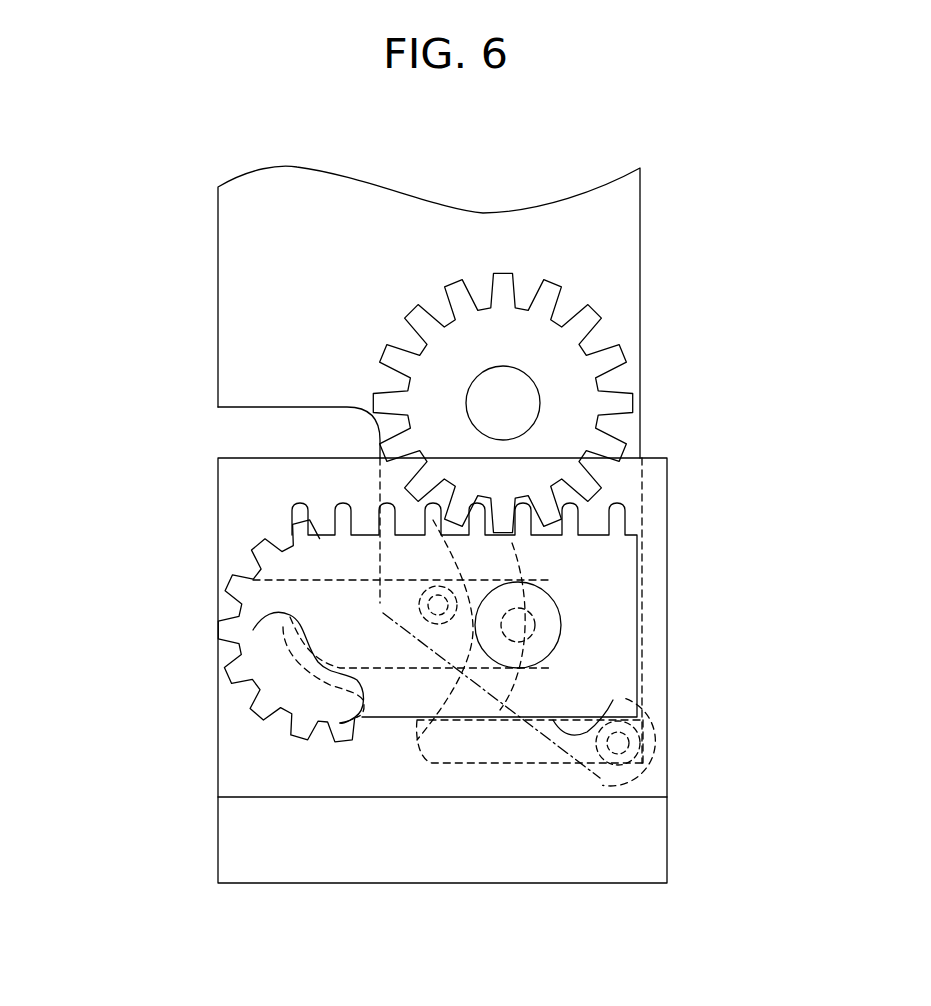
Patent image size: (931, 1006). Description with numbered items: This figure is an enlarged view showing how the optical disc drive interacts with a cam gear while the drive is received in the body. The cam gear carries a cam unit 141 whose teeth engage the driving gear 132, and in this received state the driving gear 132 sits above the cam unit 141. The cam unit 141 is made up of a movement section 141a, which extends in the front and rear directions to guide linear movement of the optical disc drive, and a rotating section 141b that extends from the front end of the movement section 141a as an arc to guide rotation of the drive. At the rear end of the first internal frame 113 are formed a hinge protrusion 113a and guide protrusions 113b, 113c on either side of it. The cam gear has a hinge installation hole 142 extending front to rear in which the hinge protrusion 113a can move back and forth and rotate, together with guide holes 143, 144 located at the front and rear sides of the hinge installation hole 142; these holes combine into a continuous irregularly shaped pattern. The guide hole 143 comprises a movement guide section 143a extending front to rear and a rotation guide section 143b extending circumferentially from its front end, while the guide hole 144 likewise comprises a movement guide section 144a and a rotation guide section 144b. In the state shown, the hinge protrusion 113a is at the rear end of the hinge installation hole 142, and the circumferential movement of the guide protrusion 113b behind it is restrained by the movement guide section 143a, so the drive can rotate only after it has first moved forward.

The first internal frame 113 is at (620, 253).
The hinge protrusion 113a is at (500, 650).
The guide protrusion 113b is at (613, 700).
The guide protrusion 113c is at (438, 597).
The driving gear 132 is at (583, 390).
The cam unit 141 is at (97, 505).
The movement section 141a is at (438, 597).
The rotating section 141b is at (253, 600).
The hinge installation hole 142 is at (397, 650).
The guide hole 143 is at (795, 545).
The movement guide section 143a is at (600, 707).
The rotation guide section 143b is at (515, 545).
The guide hole 144 is at (93, 659).
The movement guide section 144a is at (253, 630).
The rotation guide section 144b is at (290, 700).